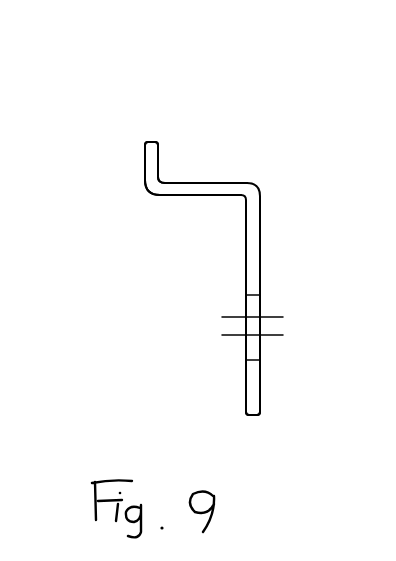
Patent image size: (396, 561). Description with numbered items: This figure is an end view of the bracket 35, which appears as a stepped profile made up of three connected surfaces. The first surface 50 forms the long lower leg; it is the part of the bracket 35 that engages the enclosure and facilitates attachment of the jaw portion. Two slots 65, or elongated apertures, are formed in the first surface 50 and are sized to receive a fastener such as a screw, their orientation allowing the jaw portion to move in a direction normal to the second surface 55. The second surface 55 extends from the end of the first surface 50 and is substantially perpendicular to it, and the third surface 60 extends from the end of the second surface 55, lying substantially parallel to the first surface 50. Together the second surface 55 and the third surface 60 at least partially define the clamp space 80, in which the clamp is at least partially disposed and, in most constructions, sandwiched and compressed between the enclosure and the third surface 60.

The bracket 35 is at (376, 14).
The clamp space 80 is at (221, 163).
The third surface 60 is at (145, 162).
The second surface 55 is at (185, 197).
The slots 65 is at (260, 297).
The first surface 50 is at (246, 398).